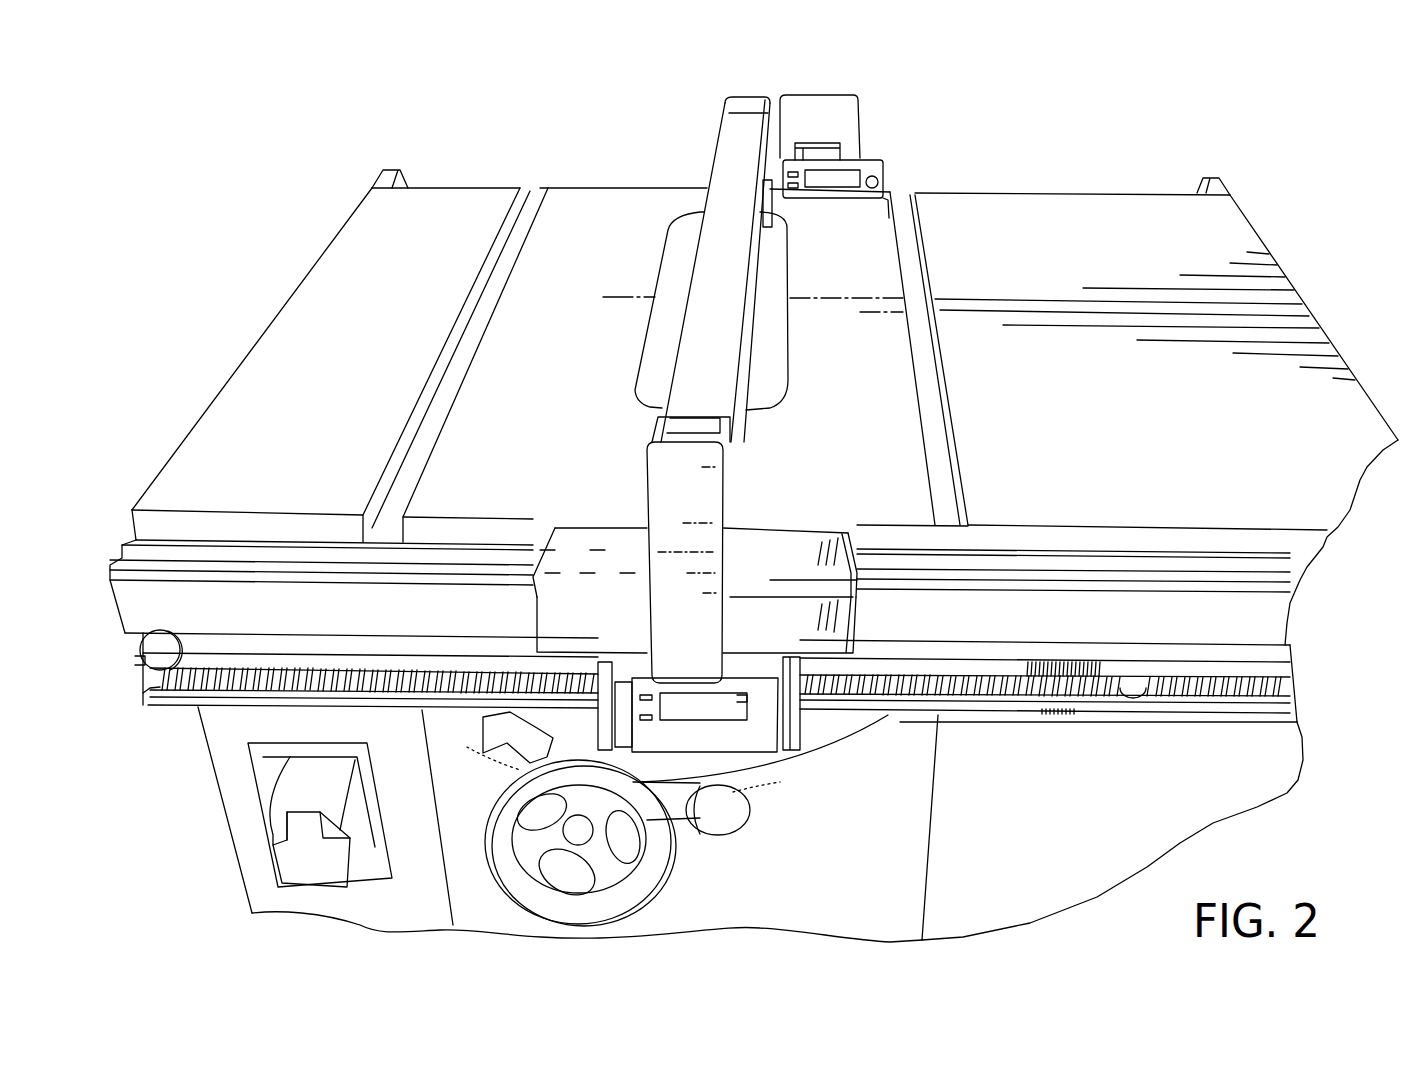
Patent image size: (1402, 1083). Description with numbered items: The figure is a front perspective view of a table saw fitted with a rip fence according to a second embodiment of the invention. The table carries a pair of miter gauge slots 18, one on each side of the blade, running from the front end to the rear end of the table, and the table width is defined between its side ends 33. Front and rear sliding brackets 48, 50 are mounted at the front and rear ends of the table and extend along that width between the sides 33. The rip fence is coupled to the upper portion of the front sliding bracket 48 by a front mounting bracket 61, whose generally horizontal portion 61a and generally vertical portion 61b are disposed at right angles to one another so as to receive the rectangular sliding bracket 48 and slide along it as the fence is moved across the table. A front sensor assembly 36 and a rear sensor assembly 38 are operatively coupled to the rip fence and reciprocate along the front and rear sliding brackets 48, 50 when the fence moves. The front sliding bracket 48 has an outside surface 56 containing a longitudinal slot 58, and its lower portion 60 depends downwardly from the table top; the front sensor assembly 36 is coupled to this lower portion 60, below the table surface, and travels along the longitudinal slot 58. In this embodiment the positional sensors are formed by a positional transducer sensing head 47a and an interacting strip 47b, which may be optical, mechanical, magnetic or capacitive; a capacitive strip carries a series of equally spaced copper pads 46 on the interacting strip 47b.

The miter gauge slots 18 is at (458, 370).
The side ends 33 is at (297, 287).
The front sensor assembly 36 is at (640, 660).
The rear sensor assembly 38 is at (864, 184).
The copper pads 46 is at (344, 684).
The positional transducer sensing head 47a is at (747, 739).
The interacting strip 47b is at (177, 684).
The front sliding bracket 48 is at (470, 550).
The rear sliding bracket 50 is at (488, 178).
The outside surface 56 is at (1055, 610).
The longitudinal slot 58 is at (1150, 690).
The lower portion 60 is at (130, 633).
The front mounting bracket 61 is at (739, 558).
The horizontal portion 61a is at (765, 550).
The vertical portion 61b is at (810, 633).